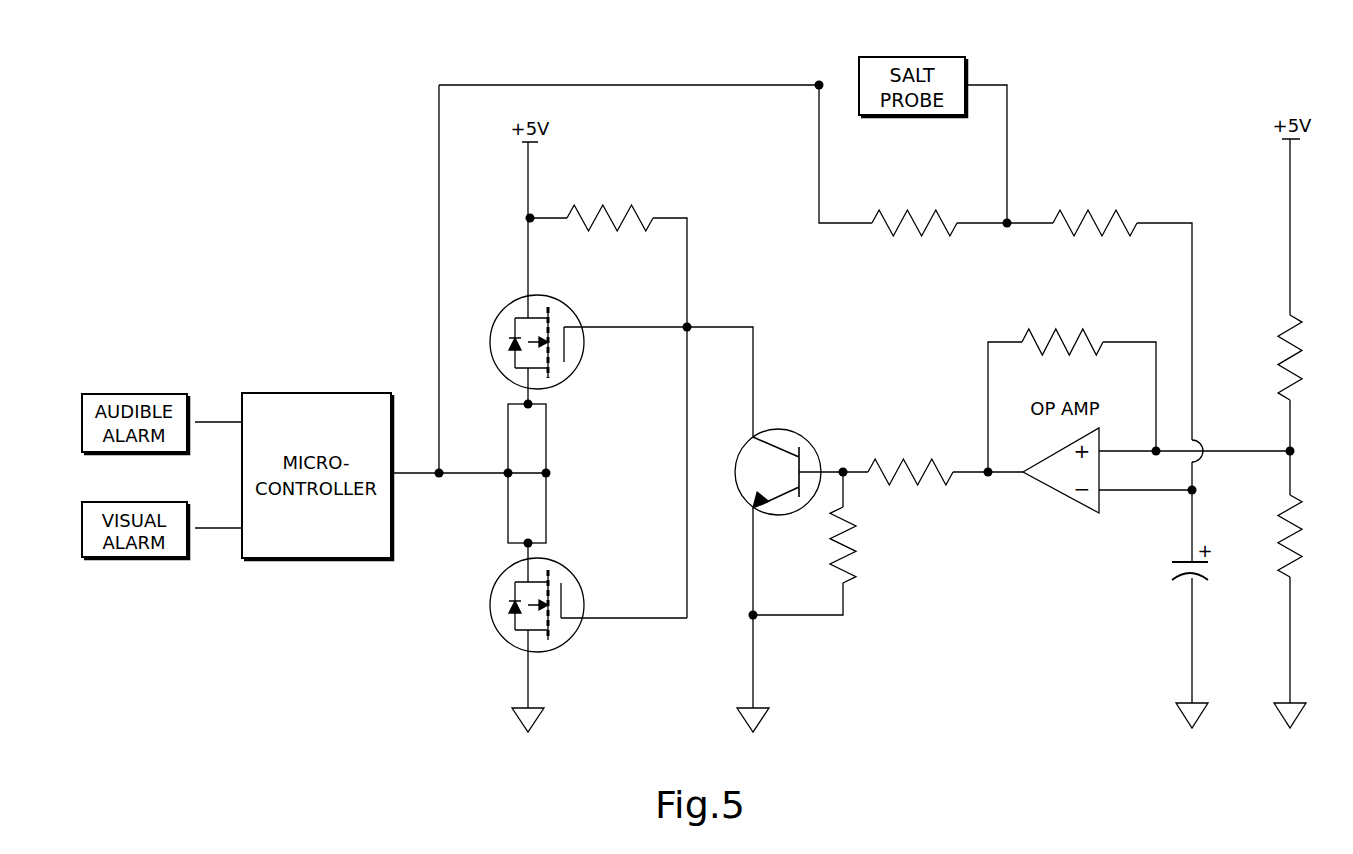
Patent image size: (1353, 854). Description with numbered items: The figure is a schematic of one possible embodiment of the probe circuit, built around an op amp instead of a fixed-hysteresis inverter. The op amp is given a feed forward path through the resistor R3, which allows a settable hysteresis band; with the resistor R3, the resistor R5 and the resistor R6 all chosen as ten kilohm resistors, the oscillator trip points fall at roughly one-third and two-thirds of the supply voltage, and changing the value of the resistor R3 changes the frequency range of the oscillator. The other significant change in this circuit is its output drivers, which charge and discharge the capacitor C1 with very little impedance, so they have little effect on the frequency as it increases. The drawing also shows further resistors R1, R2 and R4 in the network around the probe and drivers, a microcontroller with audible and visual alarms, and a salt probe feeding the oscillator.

The resistor R1 is at (610, 204).
The resistor R2 is at (914, 209).
The feed forward resistor R3 is at (1062, 329).
The resistor R4 is at (1095, 209).
The resistor R5 is at (1305, 357).
The resistor R6 is at (1305, 536).
The capacitor C1 is at (1208, 573).